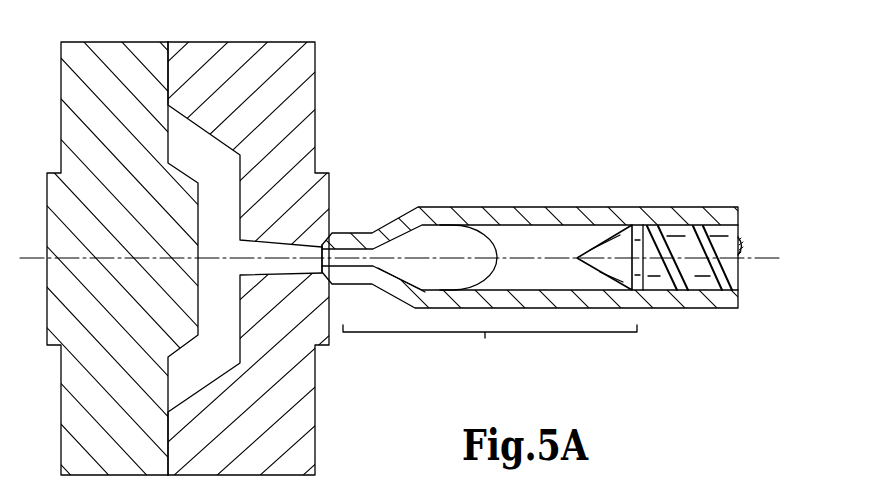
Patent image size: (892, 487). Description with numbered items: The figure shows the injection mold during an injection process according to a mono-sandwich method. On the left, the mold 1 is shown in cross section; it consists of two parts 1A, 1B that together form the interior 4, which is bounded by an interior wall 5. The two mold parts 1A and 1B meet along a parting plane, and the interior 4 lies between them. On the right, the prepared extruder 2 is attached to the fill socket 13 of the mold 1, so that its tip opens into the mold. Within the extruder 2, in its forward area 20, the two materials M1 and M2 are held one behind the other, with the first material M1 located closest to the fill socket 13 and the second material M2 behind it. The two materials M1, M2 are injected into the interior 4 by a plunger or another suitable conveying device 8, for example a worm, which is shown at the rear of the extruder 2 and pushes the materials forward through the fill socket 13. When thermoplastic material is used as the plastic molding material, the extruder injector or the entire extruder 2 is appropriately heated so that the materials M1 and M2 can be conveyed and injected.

The mold 1 is at (400, 134).
The mold part 1A is at (126, 92).
The mold part 1B is at (252, 93).
The extruder 2 is at (483, 224).
The interior 4 is at (225, 205).
The interior wall 5 is at (172, 165).
The conveying device 8 is at (690, 243).
The fill socket 13 is at (318, 232).
The forward area 20 is at (490, 348).
The material M1 is at (450, 237).
The material M2 is at (550, 243).